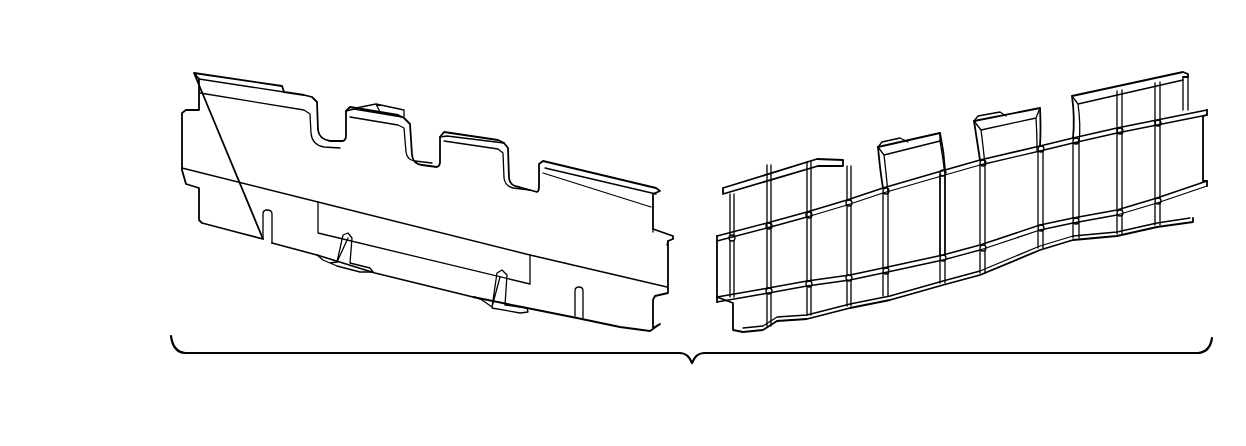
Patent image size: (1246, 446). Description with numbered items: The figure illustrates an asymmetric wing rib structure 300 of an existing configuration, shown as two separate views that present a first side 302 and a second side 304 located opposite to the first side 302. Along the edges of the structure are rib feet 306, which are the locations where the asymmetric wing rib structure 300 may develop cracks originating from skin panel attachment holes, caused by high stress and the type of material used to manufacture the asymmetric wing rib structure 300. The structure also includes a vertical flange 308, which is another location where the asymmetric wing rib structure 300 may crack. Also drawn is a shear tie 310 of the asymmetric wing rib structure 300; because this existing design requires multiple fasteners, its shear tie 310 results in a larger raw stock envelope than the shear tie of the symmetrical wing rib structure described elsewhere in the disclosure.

The asymmetric wing rib structure 300 is at (672, 140).
The first side 302 is at (971, 192).
The second side 304 is at (420, 190).
The rib feet 306 is at (387, 115).
The vertical flange 308 is at (950, 215).
The shear tie 310 is at (1007, 108).